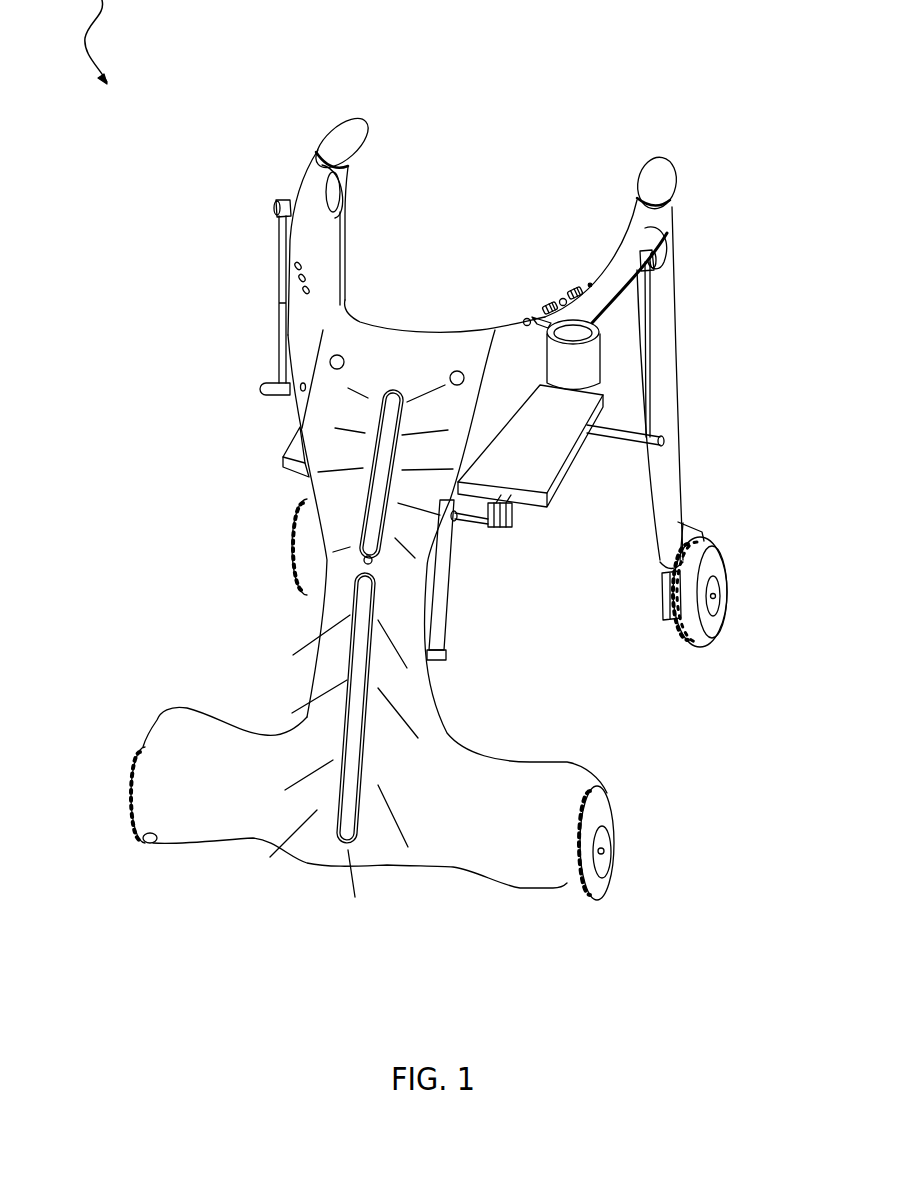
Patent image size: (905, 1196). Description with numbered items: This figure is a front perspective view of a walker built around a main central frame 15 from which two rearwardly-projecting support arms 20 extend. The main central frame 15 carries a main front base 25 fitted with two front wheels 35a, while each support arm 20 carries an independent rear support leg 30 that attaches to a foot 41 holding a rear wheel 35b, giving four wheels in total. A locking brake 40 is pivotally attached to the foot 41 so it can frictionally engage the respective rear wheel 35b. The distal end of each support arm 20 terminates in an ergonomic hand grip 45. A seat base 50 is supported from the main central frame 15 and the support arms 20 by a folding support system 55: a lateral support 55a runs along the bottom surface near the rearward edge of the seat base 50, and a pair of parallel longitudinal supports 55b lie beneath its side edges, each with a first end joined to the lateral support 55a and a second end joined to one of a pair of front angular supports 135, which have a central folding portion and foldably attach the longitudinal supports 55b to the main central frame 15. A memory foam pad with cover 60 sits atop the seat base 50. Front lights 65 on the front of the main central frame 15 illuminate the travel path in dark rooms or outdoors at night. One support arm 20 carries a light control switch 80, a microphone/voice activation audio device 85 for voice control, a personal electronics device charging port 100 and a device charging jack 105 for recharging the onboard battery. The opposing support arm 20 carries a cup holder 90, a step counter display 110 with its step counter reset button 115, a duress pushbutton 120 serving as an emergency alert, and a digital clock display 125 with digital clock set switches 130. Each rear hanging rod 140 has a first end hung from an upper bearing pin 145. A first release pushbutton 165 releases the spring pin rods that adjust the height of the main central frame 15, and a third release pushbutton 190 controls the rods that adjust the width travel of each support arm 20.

The main central frame 15 is at (330, 428).
The support arm 20 is at (315, 175).
The main front base 25 is at (218, 750).
The rear support leg 30 is at (345, 218).
The front wheel 35a is at (128, 803).
The rear wheel 35b is at (303, 510).
The locking brake 40 is at (703, 530).
The foot 41 is at (661, 613).
The ergonomic hand grip 45 is at (348, 136).
The seat base 50 is at (285, 475).
The folding support system 55 is at (278, 352).
The lateral support 55a is at (664, 437).
The longitudinal support 55b is at (512, 520).
The memory foam pad with cover 60 is at (282, 463).
The front light 65 is at (373, 518).
The light control switch 80 is at (299, 278).
The microphone/voice activation audio device 85 is at (296, 263).
The cup holder 90 is at (578, 357).
The personal electronics device charging port 100 is at (302, 290).
The device charging jack 105 is at (263, 385).
The step counter display 110 is at (545, 303).
The step counter reset button 115 is at (526, 318).
The duress pushbutton 120 is at (561, 298).
The digital clock display 125 is at (573, 286).
The digital clock set switch 130 is at (590, 280).
The front angular support 135 is at (447, 588).
The rear hanging rod 140 is at (650, 297).
The upper bearing pin 145 is at (277, 207).
The first release pushbutton 165 is at (365, 562).
The third release pushbutton 190 is at (330, 362).